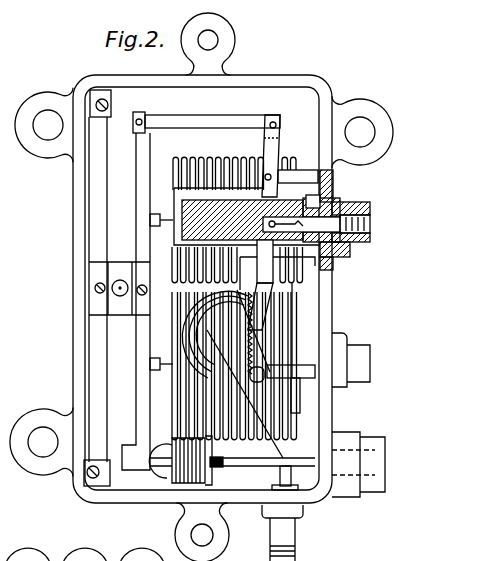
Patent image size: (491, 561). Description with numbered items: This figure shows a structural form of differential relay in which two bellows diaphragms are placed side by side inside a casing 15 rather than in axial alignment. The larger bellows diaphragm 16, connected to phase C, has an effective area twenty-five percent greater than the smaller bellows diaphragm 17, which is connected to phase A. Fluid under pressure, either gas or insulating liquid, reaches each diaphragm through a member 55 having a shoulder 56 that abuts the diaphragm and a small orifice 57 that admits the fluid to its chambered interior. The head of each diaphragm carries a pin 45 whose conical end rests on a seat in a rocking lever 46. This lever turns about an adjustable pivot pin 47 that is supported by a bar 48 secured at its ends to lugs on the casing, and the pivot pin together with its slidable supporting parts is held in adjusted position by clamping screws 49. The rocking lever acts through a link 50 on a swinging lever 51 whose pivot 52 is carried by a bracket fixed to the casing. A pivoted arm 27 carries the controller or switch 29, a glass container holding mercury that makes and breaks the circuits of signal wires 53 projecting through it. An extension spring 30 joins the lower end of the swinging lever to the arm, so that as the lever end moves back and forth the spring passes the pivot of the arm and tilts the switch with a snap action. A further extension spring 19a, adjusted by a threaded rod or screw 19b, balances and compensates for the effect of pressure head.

The casing 15 is at (292, 86).
The larger bellows diaphragm 16 is at (293, 400).
The smaller bellows diaphragm 17 is at (205, 161).
The extension spring 19a is at (209, 473).
The threaded rod or screw 19b is at (263, 456).
The pivoted arm 27 is at (262, 331).
The controller or switch 29 is at (297, 284).
The extension spring 30 is at (272, 307).
The pin 45 is at (160, 213).
The rocking lever 46 is at (135, 358).
The adjustable pivot pin 47 is at (120, 279).
The bar 48 is at (90, 352).
The clamping screws 49 is at (96, 286).
The link 50 is at (200, 119).
The swinging lever 51 is at (279, 150).
The pivot 52 is at (284, 166).
The signal wires 53 is at (281, 451).
The member 55 is at (337, 194).
The shoulder 56 is at (311, 200).
The orifice 57 is at (301, 224).